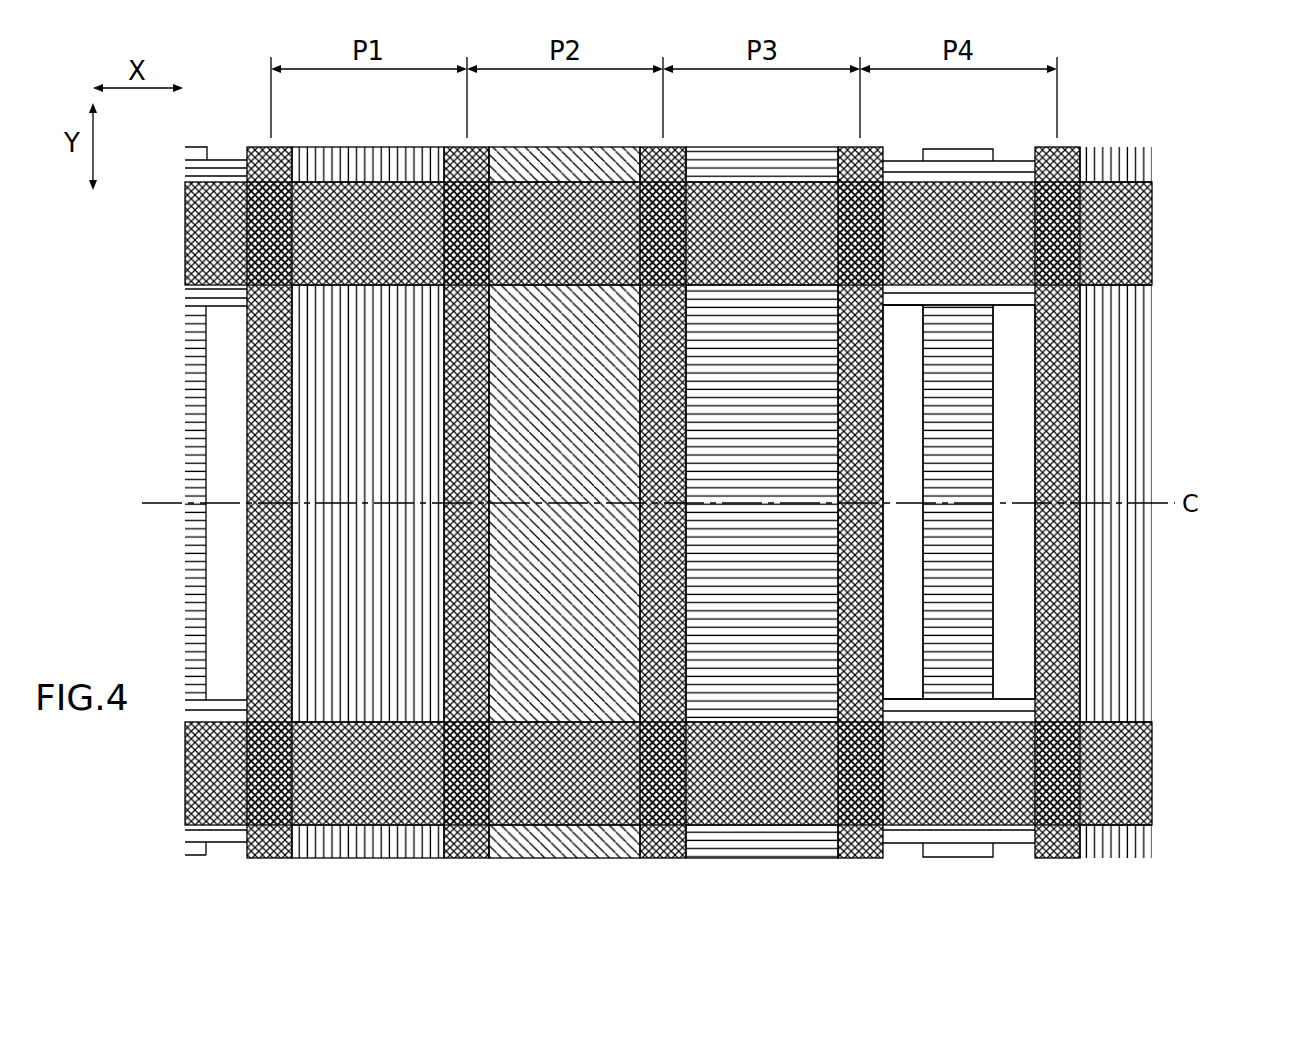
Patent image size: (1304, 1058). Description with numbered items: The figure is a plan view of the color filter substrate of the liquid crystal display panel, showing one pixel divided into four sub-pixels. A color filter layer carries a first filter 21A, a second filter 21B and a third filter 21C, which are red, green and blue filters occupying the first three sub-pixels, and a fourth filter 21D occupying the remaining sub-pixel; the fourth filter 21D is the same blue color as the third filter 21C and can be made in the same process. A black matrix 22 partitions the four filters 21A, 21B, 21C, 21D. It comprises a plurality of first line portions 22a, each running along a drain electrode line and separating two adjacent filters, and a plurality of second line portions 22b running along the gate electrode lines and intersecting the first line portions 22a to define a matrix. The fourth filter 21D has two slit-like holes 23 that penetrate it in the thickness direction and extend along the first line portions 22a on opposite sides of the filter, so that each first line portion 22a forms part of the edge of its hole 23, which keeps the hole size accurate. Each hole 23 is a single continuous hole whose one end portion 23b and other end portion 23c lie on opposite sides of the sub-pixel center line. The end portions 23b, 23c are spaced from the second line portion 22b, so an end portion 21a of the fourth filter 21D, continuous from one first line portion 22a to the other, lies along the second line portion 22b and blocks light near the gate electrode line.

The first filter 21A is at (367, 692).
The second filter 21B is at (570, 692).
The third filter 21C is at (760, 692).
The fourth filter 21D is at (960, 441).
The end portion of the fourth filter 21a is at (962, 295).
The black matrix 22 is at (735, 506).
The first line portion 22a is at (1057, 388).
The second line portion 22b is at (1003, 220).
The hole 23 is at (903, 343).
The one end portion of the hole 23b is at (914, 308).
The other end portion of the hole 23c is at (922, 702).